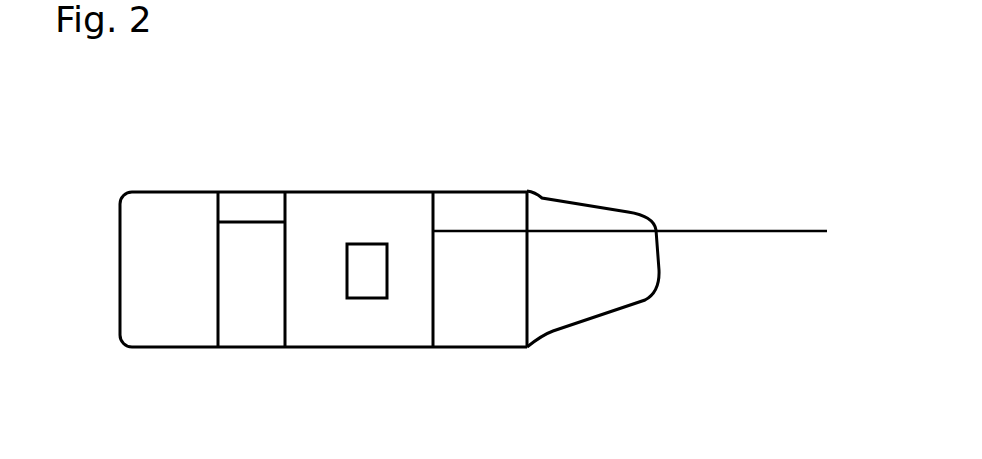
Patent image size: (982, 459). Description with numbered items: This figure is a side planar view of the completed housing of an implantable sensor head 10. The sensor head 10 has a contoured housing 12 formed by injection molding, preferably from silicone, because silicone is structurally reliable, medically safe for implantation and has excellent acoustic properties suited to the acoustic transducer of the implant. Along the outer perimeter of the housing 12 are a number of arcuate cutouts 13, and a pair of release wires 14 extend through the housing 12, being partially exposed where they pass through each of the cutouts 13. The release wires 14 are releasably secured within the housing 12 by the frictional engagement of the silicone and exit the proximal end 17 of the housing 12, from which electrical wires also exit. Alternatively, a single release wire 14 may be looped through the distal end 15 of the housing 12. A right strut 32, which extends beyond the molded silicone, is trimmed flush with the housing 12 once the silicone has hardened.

The sensor head 10 is at (814, 408).
The housing 12 is at (335, 210).
The arcuate cutouts 13 is at (242, 317).
The release wires 14 is at (252, 220).
The distal end 15 is at (147, 275).
The proximal end 17 is at (623, 278).
The right strut 32 is at (358, 283).